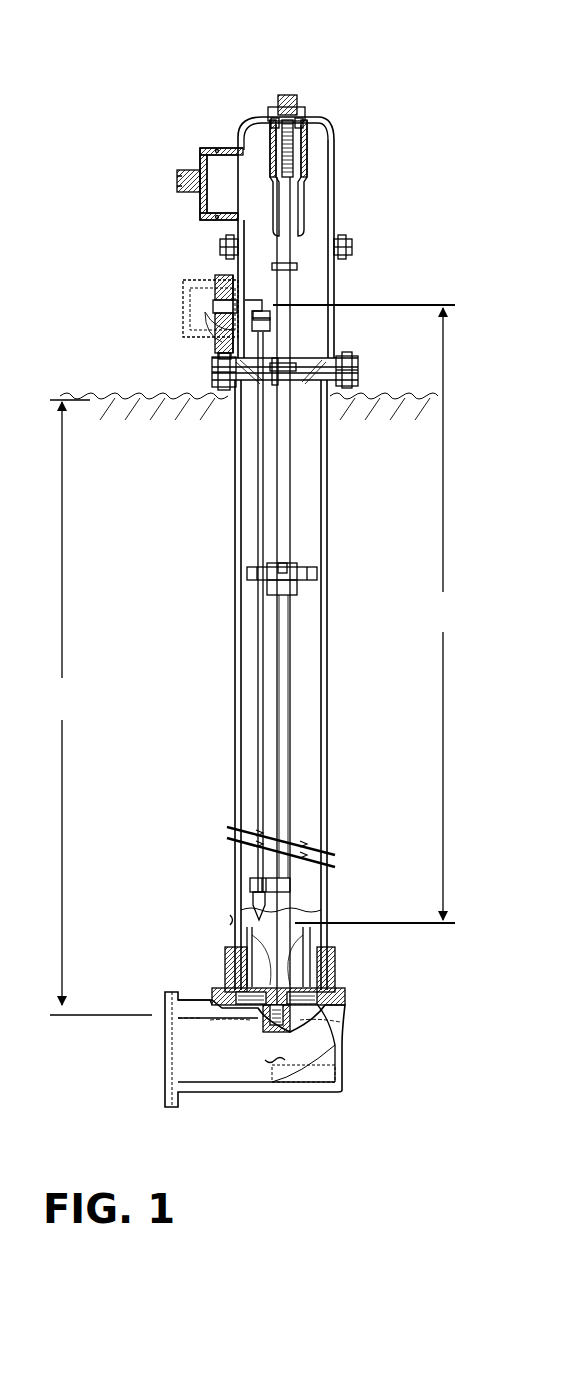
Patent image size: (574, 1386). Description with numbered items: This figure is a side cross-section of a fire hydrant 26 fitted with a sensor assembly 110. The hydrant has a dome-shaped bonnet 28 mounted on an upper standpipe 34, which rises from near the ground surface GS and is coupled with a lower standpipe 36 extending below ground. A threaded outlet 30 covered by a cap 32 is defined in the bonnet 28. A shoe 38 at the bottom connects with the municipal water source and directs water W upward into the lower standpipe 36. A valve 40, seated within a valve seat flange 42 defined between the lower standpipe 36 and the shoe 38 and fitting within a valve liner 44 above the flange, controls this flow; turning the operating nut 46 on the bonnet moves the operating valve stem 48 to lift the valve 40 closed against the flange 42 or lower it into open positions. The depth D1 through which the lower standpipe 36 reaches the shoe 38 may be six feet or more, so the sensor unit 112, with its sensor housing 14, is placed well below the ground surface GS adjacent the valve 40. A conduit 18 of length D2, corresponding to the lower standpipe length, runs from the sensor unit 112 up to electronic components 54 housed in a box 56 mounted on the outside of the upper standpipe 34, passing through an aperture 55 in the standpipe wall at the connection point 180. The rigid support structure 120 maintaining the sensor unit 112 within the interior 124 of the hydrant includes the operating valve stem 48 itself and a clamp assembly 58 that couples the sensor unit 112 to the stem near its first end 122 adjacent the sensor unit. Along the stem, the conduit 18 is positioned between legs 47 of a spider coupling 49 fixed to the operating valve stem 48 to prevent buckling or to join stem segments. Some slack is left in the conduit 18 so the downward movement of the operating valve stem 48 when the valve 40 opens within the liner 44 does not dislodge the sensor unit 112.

The sensor housing 14 is at (324, 913).
The conduit 18 is at (253, 583).
The fire hydrant 26 is at (366, 260).
The bonnet portion 28 is at (332, 128).
The threaded outlet 30 is at (218, 188).
The cap 32 is at (197, 168).
The upper standpipe portion 34 is at (333, 285).
The lower standpipe portion 36 is at (331, 483).
The shoe 38 is at (343, 1046).
The valve 40 is at (337, 957).
The valve seat flange 42 is at (316, 1003).
The valve liner 44 is at (334, 980).
The operating nut 46 is at (288, 95).
The legs of spider coupling 47 is at (250, 570).
The operating valve stem 48 is at (282, 617).
The spider coupling 49 is at (285, 566).
The electronic components 54 is at (196, 306).
The aperture 55 is at (249, 302).
The box 56 is at (183, 337).
The clamp assembly 58 is at (305, 884).
The sensor assembly 110 is at (252, 340).
The sensor unit 112 is at (238, 897).
The rigid support structure 120 is at (269, 866).
The first end 122 is at (281, 866).
The interior 124 is at (243, 857).
The rod fitting 180 is at (268, 318).
The ground surface GS is at (118, 398).
The distance D1 is at (100, 707).
The length D2 is at (366, 614).
The water W is at (243, 922).